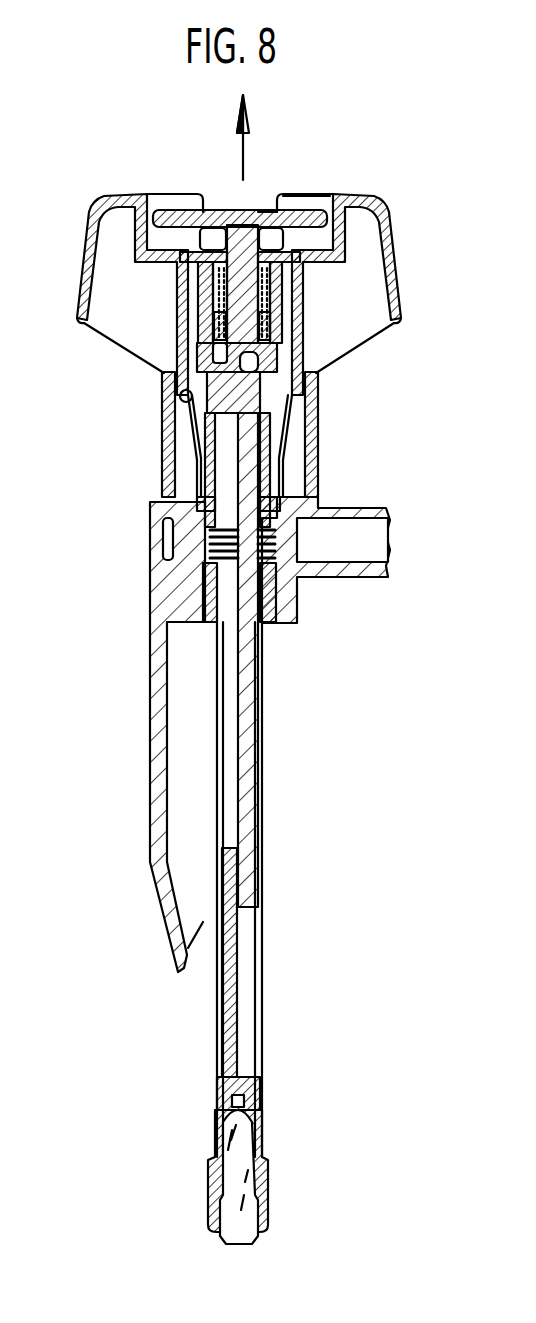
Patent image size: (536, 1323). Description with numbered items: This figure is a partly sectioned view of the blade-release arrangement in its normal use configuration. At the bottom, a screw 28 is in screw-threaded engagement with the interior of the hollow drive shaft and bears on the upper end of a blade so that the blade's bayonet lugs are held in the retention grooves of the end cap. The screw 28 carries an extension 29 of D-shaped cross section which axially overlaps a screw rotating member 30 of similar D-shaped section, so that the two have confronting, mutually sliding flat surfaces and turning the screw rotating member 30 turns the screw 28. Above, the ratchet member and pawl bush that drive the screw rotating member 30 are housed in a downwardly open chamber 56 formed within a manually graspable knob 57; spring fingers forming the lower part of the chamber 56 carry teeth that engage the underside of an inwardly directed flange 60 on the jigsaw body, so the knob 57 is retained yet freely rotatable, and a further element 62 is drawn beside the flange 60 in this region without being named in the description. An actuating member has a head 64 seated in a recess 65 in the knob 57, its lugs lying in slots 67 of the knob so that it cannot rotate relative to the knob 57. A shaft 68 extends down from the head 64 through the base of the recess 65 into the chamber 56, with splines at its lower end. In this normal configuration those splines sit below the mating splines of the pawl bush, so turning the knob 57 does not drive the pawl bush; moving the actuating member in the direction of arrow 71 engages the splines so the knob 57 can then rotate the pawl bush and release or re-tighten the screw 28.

The screw 28 is at (219, 1101).
The extension 29 is at (219, 1022).
The screw rotating member 30 is at (251, 726).
The chamber 56 is at (180, 397).
The knob 57 is at (80, 259).
The flange 60 is at (152, 504).
The spring 62 is at (207, 538).
The head 64 is at (220, 207).
The recess 65 is at (313, 200).
The slots 67 is at (281, 207).
The shaft 68 is at (256, 284).
The arrow 71 is at (238, 139).